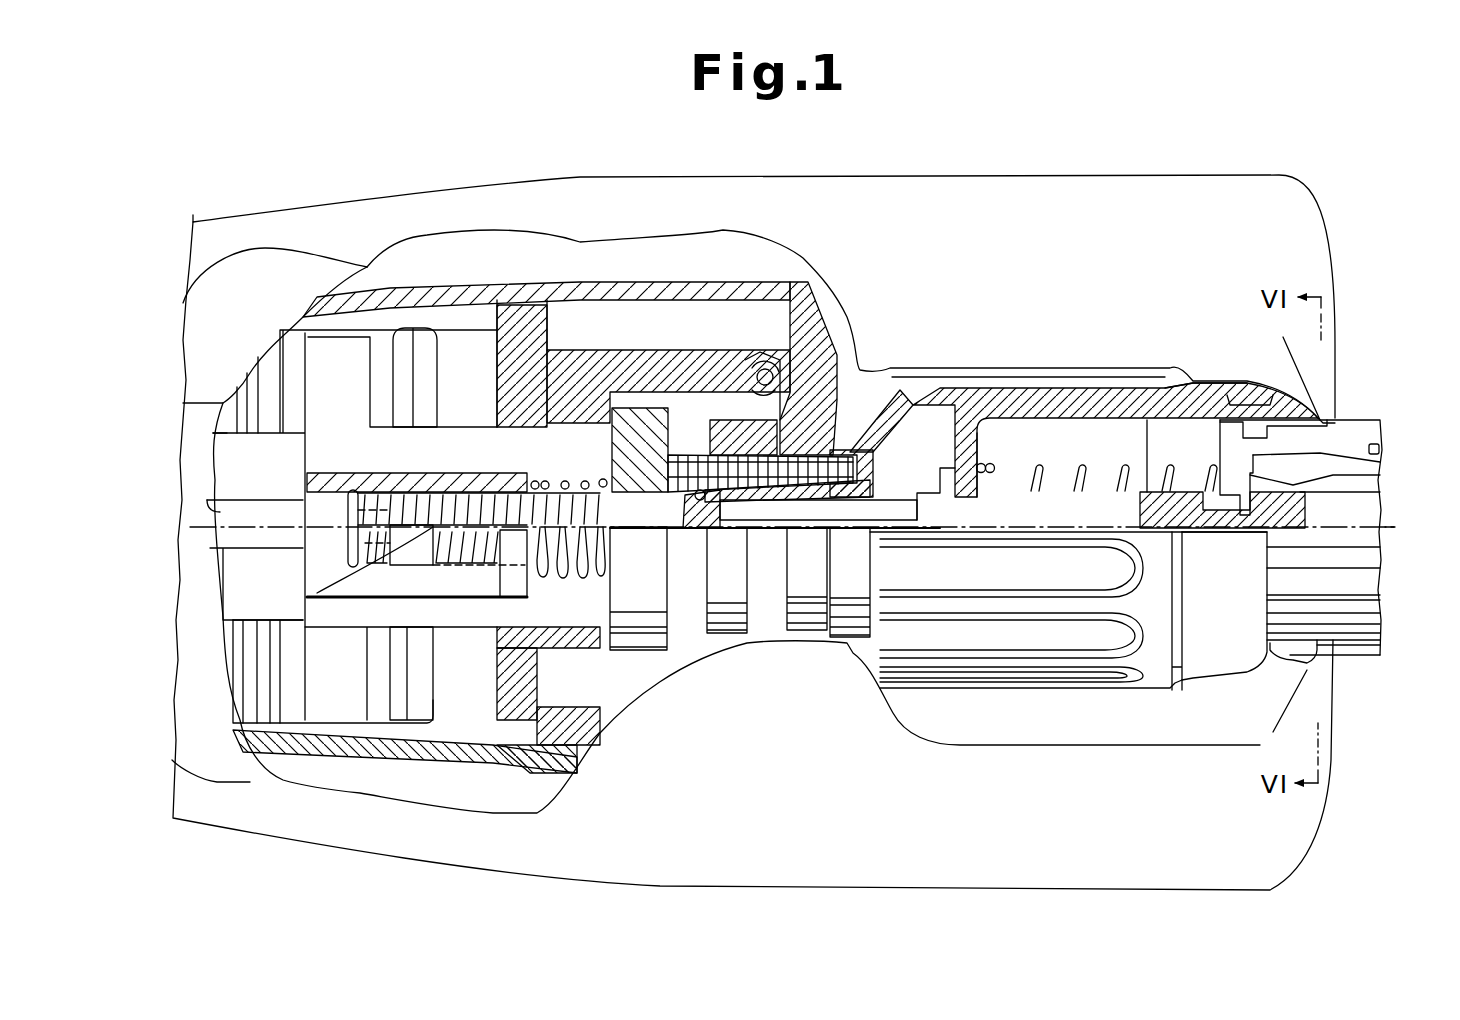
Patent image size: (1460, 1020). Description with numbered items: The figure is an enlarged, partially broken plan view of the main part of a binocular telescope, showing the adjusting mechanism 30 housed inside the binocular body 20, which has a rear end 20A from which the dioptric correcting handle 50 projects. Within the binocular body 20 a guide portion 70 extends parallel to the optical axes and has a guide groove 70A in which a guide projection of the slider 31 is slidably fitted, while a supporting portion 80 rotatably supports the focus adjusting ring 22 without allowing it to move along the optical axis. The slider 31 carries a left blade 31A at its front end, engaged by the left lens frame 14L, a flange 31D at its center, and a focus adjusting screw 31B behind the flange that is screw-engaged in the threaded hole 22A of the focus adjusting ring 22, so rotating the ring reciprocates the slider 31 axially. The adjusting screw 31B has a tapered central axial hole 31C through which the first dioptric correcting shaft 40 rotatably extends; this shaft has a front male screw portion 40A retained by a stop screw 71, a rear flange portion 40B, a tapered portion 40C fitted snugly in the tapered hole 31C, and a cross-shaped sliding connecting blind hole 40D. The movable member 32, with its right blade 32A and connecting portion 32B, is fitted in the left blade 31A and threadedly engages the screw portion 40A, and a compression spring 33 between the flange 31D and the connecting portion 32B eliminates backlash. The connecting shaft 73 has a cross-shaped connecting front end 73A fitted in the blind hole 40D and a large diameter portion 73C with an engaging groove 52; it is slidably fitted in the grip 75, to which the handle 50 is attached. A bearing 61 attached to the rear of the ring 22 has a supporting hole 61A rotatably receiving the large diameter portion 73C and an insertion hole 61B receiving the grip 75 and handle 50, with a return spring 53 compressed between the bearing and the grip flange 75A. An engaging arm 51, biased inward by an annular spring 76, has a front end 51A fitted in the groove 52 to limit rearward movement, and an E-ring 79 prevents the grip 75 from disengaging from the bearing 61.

The binocular body 20 is at (1183, 173).
The rear end of the binocular body 20A is at (1333, 765).
The adjusting mechanism 30 is at (1387, 520).
The guide portion 70 is at (236, 575).
The guide groove 70A is at (212, 508).
The stop screw 71 is at (343, 513).
The slider 31 is at (513, 600).
The left blade 31A is at (317, 740).
The focus adjusting screw 31B is at (690, 565).
The tapered central axial hole 31C is at (700, 492).
The flange 31D is at (640, 637).
The movable member 32 is at (413, 365).
The right blade 32A is at (320, 380).
The connecting portion 32B is at (510, 550).
The compression spring 33 is at (590, 495).
The left lens frame 14L is at (263, 687).
The first dioptric correcting shaft 40 is at (565, 298).
The front male screw portion 40A is at (477, 488).
The flange portion 40B is at (875, 460).
The tapered portion 40C is at (763, 528).
The sliding connecting blind hole 40D is at (890, 497).
The supporting portion 80 is at (707, 490).
The focus adjusting ring 22 is at (1073, 387).
The threaded hole 22A is at (828, 370).
The bearing 61 is at (1193, 675).
The supporting hole 61A is at (1010, 492).
The insertion hole 61B is at (1150, 413).
The return spring 53 is at (1123, 470).
The E-ring 79 is at (948, 500).
The connecting shaft 73 is at (1061, 491).
The connecting front end 73A is at (803, 520).
The large diameter portion 73C is at (1027, 530).
The engaging groove 52 is at (1222, 512).
The dioptric correcting handle 50 is at (1368, 420).
The engaging arm 51 is at (1337, 457).
The front end of the engaging arm 51A is at (1240, 485).
The grip 75 is at (1333, 420).
The flange of the grip 75A is at (1231, 430).
The annular spring 76 is at (1383, 450).